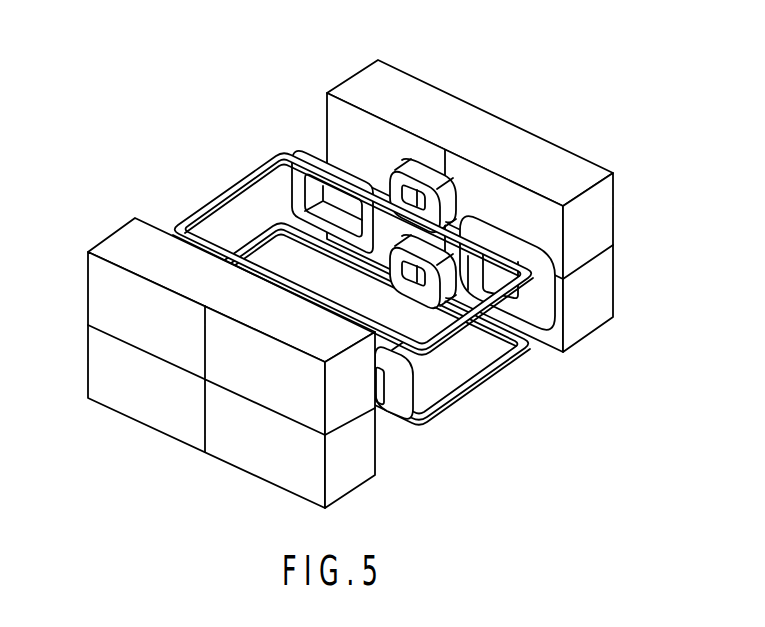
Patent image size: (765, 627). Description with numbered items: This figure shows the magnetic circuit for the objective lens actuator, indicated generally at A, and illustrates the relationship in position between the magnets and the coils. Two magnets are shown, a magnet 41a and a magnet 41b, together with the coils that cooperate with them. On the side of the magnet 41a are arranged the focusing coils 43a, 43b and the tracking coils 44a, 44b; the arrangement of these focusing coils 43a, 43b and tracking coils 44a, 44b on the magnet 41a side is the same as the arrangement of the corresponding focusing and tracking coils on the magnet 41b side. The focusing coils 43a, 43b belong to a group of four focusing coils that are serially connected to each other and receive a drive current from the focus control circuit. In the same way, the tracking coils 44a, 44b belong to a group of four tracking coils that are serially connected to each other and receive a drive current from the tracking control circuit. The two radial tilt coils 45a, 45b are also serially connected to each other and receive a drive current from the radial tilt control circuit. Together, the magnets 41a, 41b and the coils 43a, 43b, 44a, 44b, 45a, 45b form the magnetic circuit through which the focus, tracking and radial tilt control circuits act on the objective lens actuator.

The actuator assembly A is at (164, 153).
The magnet 41a is at (356, 85).
The magnet 41b is at (125, 243).
The focusing coil 43a is at (346, 164).
The focusing coil 43b is at (503, 242).
The tracking coil 44a is at (452, 207).
The tracking coil 44b is at (517, 302).
The radial tilt coil 45a is at (473, 338).
The radial tilt coil 45b is at (450, 410).